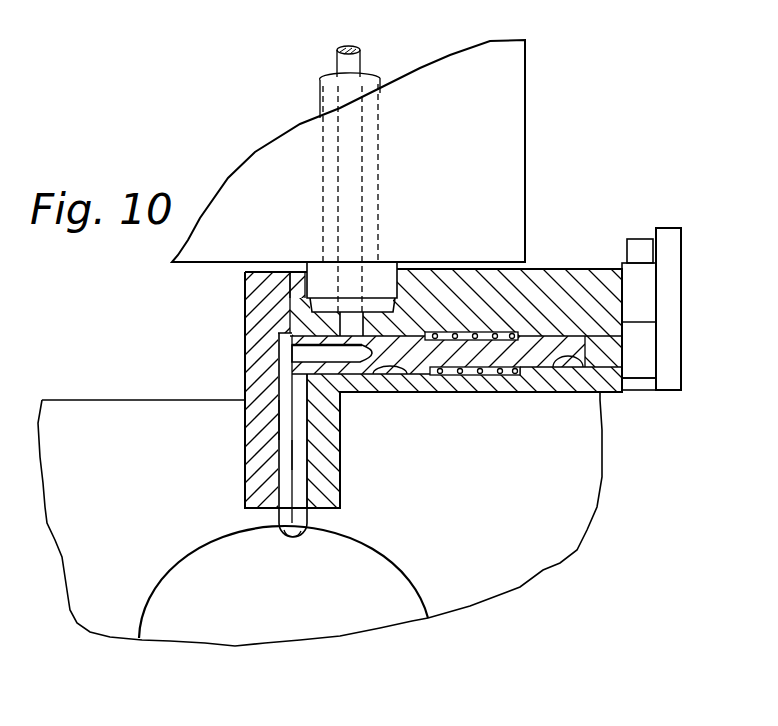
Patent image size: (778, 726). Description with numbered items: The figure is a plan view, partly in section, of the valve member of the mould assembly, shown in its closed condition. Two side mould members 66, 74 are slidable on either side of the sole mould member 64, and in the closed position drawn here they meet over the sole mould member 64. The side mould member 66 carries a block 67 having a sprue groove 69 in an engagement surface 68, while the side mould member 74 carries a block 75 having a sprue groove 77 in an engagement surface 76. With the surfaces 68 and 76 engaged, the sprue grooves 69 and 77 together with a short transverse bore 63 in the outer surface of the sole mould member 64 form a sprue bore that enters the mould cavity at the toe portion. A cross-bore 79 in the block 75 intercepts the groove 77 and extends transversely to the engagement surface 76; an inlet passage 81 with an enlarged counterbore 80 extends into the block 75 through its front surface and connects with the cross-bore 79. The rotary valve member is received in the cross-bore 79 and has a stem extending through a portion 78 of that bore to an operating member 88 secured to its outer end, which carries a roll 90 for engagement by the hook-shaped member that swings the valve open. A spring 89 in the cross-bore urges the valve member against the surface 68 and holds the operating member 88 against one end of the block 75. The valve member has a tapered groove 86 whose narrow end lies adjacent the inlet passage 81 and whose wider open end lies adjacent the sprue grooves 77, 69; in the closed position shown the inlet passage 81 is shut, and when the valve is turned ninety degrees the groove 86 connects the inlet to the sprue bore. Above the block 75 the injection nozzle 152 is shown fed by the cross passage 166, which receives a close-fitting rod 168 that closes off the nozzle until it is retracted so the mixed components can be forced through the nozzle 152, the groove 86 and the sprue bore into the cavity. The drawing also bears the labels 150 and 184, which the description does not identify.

The mounting member 150 is at (541, 92).
The rod 168 is at (355, 63).
The cross passage 166 is at (358, 163).
The block 75 is at (585, 275).
The block 67 is at (248, 330).
The injection nozzle 152 is at (401, 265).
The inlet passage 81 is at (358, 317).
The enlarged counterbore 80 is at (312, 270).
The tapered groove 86 is at (298, 355).
The upper spring 184 is at (413, 337).
The spring 89 is at (484, 375).
The cross-bore 79 is at (402, 377).
The portion of the cross-bore 78 is at (553, 367).
The roll 90 is at (638, 243).
The operating member 88 is at (670, 293).
The engagement surface 76 is at (300, 426).
The sprue groove 77 is at (302, 462).
The sprue groove 69 is at (283, 418).
The engagement surface 68 is at (290, 455).
The transverse bore 63 is at (280, 533).
The sole mould member 64 is at (303, 628).
The side mould member 66 is at (108, 410).
The side mould member 74 is at (593, 477).